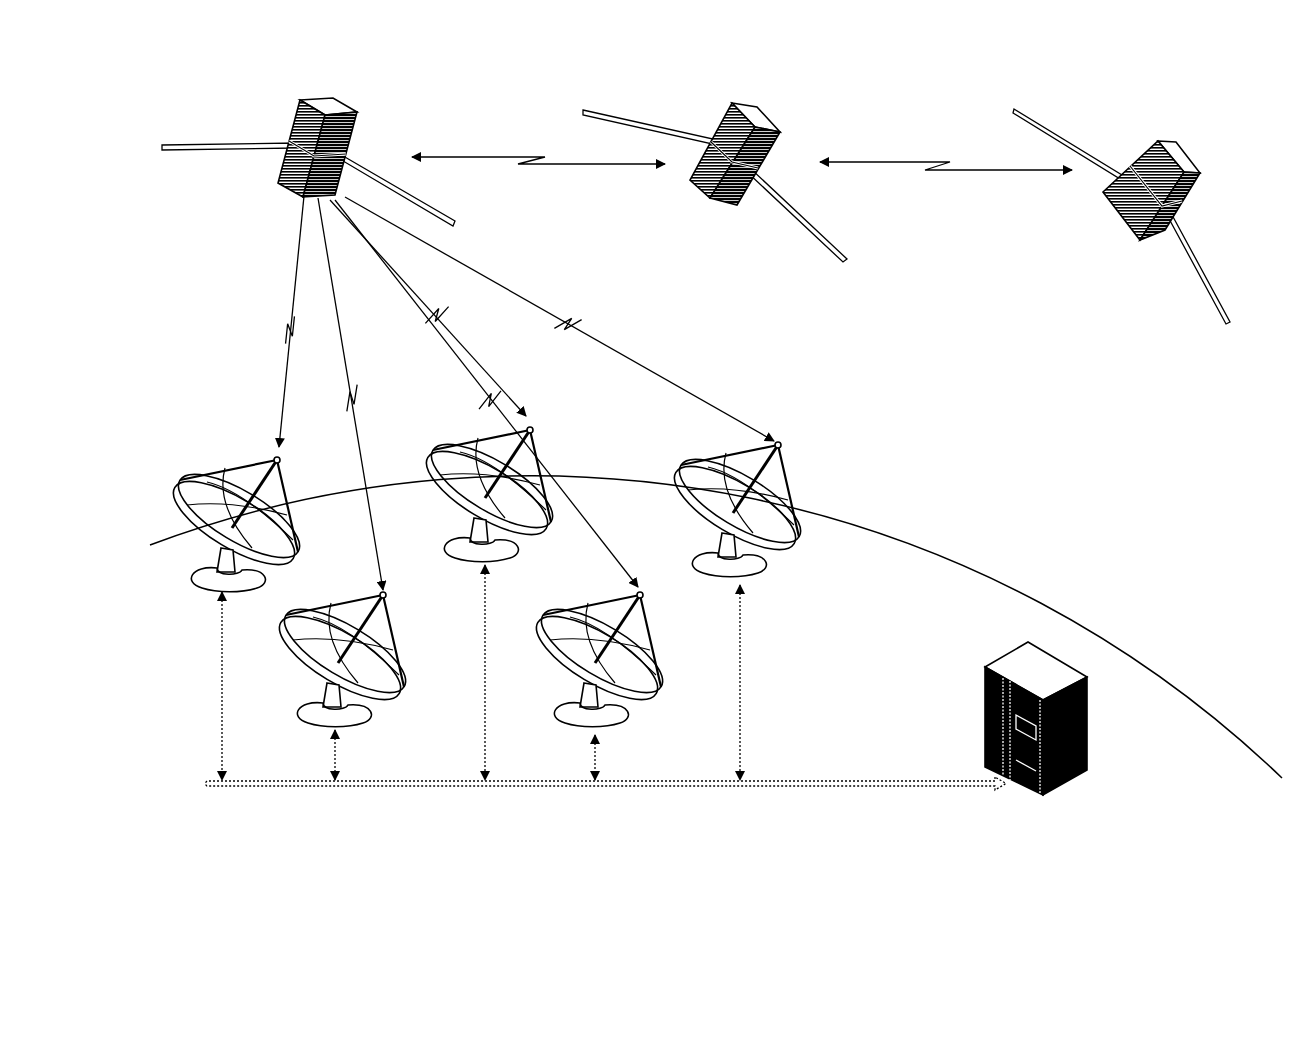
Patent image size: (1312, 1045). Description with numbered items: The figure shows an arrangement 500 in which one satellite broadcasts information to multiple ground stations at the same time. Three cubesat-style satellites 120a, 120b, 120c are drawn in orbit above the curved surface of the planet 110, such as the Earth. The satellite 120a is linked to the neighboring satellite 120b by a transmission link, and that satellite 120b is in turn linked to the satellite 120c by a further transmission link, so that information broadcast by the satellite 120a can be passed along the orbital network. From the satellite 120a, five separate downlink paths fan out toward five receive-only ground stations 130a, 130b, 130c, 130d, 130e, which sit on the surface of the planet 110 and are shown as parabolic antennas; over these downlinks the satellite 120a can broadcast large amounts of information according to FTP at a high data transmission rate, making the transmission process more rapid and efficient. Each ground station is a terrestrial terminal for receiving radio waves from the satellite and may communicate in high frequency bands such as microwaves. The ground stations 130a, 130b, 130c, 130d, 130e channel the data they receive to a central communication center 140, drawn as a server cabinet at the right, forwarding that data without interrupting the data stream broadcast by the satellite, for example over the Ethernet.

The satellite communication system 500 is at (186, 78).
The planet 110 is at (987, 575).
The satellite 120a is at (320, 100).
The satellite 120b is at (742, 106).
The satellite 120c is at (1155, 138).
The ground station 130a is at (230, 464).
The ground station 130b is at (452, 448).
The ground station 130c is at (693, 458).
The ground station 130d is at (308, 694).
The ground station 130e is at (566, 688).
The central communication center 140 is at (990, 662).